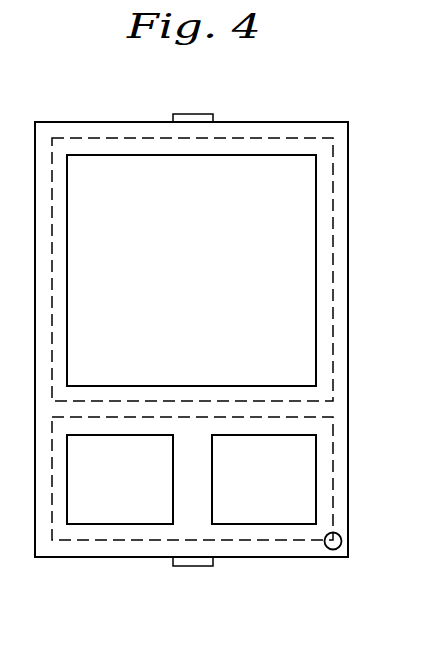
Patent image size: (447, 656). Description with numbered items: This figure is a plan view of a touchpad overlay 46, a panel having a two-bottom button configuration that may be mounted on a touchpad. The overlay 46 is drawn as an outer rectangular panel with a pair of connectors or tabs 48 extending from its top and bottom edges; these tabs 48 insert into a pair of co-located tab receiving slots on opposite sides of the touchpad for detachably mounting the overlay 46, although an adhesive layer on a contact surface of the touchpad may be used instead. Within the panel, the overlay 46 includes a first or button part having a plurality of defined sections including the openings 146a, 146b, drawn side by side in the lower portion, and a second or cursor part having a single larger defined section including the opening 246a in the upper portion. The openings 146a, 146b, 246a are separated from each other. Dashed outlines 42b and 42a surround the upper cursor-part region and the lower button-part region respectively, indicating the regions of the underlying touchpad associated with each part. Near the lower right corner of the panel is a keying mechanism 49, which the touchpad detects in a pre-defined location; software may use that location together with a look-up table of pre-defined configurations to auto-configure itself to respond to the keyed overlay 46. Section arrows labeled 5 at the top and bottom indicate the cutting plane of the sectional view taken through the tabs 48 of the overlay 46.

The touchpad overlay 46 is at (348, 343).
The lower flexible circuit region 42a is at (262, 540).
The upper flexible circuit region 42b is at (262, 138).
The opening 246a is at (316, 236).
The opening 146a is at (120, 520).
The opening 146b is at (316, 488).
The tab 48 is at (192, 113).
The keying mechanism 49 is at (342, 541).
The section line 5- 5 is at (132, 112).